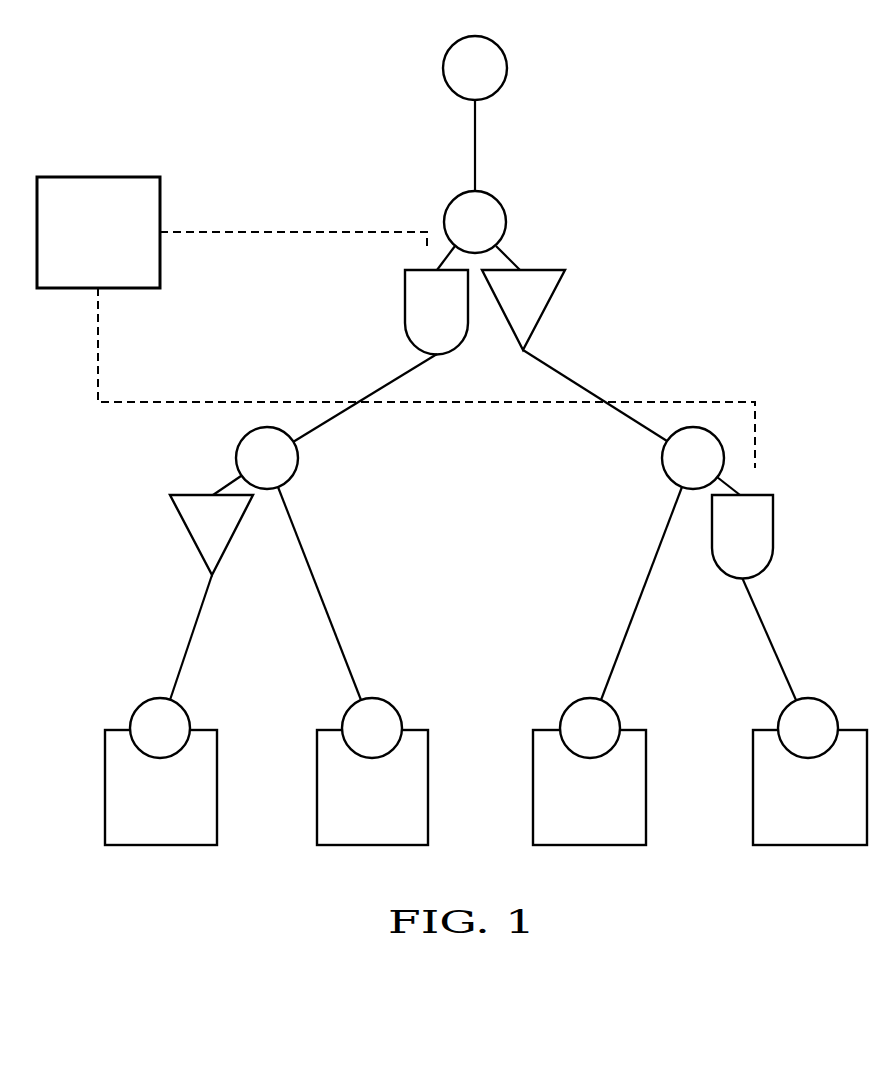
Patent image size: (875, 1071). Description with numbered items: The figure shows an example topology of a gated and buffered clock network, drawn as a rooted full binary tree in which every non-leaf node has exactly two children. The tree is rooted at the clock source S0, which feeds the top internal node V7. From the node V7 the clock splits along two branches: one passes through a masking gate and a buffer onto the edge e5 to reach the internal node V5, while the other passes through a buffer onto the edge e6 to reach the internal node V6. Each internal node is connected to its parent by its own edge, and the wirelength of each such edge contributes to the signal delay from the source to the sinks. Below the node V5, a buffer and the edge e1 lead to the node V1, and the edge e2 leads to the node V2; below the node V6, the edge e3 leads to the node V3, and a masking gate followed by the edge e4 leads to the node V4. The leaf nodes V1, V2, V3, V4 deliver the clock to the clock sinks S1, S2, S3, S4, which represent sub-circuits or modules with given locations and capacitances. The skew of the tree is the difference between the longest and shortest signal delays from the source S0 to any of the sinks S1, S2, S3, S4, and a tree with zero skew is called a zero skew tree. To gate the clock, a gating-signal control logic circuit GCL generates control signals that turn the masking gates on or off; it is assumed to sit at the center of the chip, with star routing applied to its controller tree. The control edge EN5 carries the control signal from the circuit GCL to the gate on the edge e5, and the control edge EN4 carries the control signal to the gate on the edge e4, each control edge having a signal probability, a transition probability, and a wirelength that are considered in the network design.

The clock source S0 is at (475, 68).
The internal node V7 is at (475, 222).
The gating-signal control logic circuit GCL is at (98, 232).
The control signal edge EN5 is at (293, 220).
The control signal edge EN4 is at (426, 378).
The edge e5 is at (365, 395).
The edge e6 is at (595, 394).
The internal node V5 is at (267, 458).
The internal node V6 is at (693, 458).
The edge e1 is at (187, 637).
The edge e2 is at (324, 593).
The edge e3 is at (638, 593).
The edge e4 is at (772, 640).
The node V1 is at (160, 728).
The node V2 is at (372, 728).
The node V3 is at (590, 728).
The node V4 is at (808, 728).
The clock sink S1 is at (161, 787).
The clock sink S2 is at (372, 787).
The clock sink S3 is at (589, 787).
The clock sink S4 is at (810, 787).